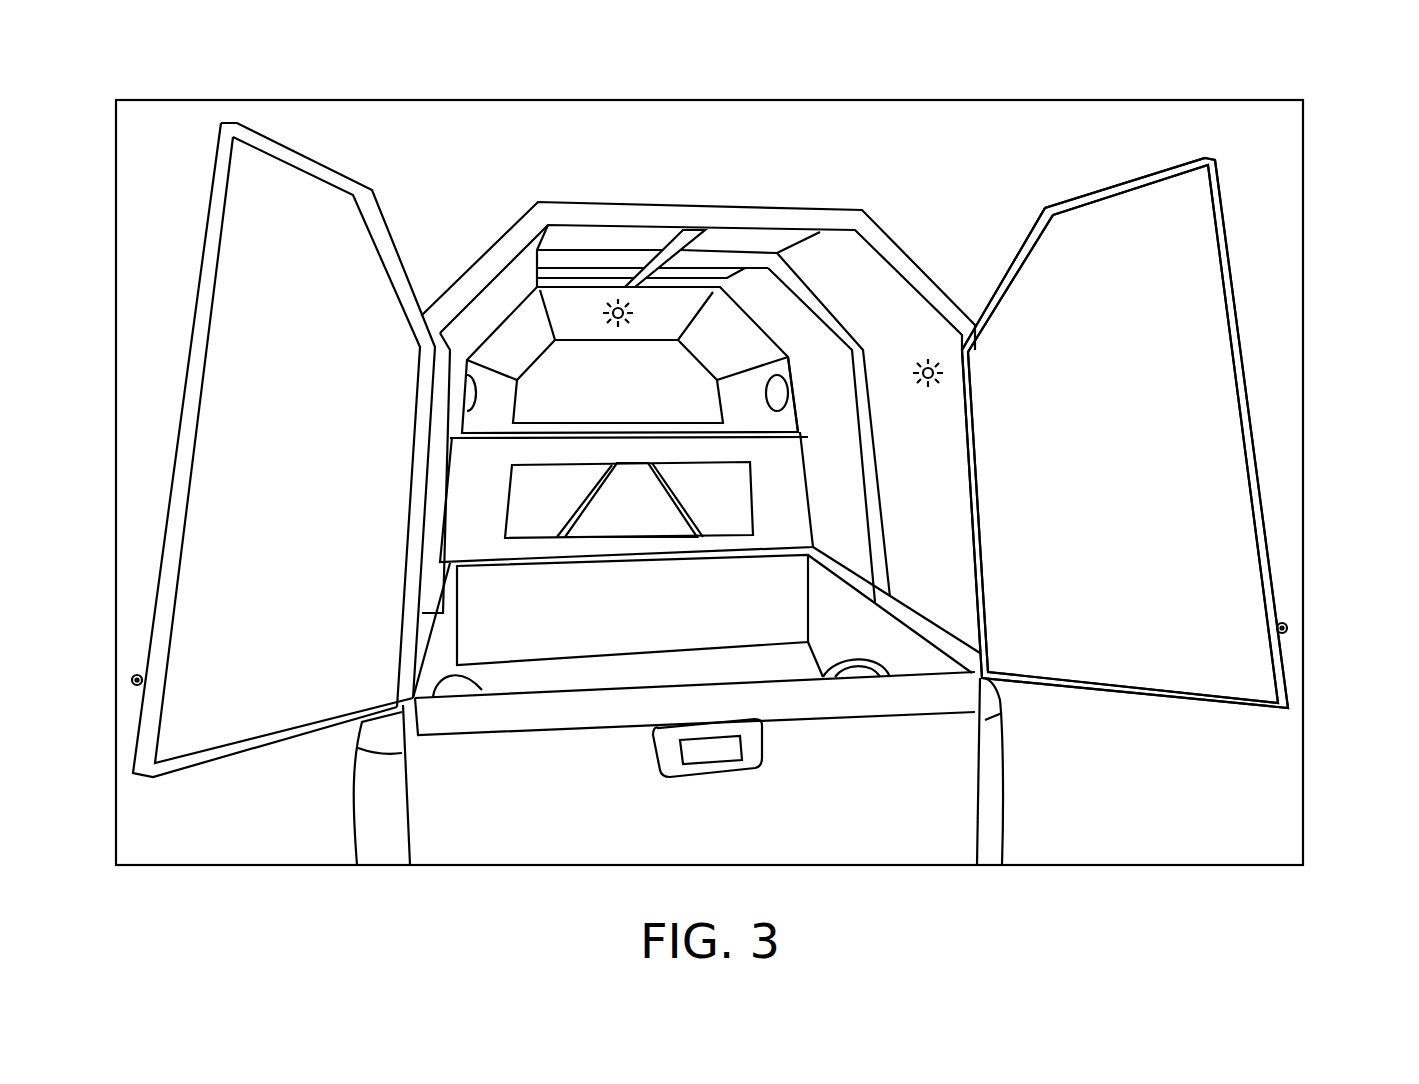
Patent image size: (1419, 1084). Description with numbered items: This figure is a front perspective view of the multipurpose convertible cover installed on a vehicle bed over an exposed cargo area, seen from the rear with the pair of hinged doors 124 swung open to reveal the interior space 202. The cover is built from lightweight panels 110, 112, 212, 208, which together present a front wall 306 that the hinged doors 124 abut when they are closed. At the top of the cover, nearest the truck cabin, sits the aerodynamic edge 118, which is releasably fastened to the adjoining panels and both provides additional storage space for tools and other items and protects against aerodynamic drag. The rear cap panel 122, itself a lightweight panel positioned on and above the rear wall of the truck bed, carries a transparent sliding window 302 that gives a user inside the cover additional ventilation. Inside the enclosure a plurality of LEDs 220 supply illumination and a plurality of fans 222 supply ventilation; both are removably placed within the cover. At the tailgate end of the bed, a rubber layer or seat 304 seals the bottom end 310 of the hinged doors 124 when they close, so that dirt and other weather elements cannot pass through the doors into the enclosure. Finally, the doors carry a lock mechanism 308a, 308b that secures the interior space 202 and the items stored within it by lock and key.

The panel 110 is at (490, 300).
The panel 112 is at (578, 232).
The aerodynamic edge 118 is at (648, 395).
The rear cap panel 122 is at (805, 500).
The hinged door 124 is at (1123, 287).
The interior space 202 is at (702, 647).
The panel 208 is at (870, 283).
The panel 212 is at (708, 237).
The LED 220 is at (928, 368).
The fan 222 is at (786, 353).
The sliding window 302 is at (572, 502).
The rubber layer or seat 304 is at (508, 718).
The front wall 306 is at (747, 222).
The lock mechanism 308a is at (136, 676).
The lock mechanism 308b is at (1284, 626).
The bottom end 310 is at (207, 757).